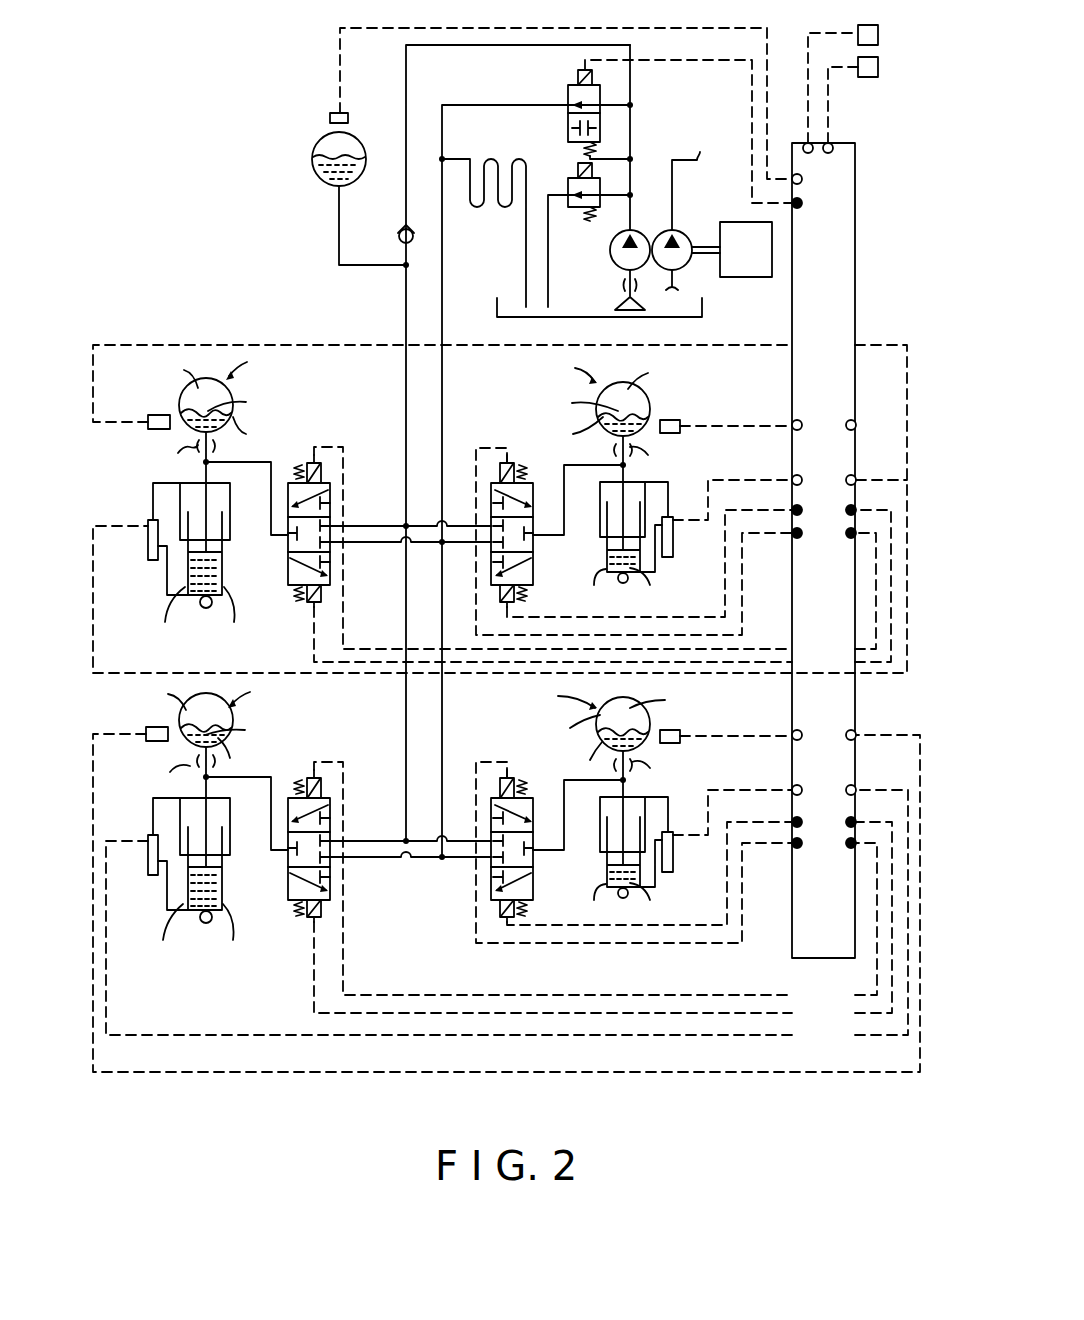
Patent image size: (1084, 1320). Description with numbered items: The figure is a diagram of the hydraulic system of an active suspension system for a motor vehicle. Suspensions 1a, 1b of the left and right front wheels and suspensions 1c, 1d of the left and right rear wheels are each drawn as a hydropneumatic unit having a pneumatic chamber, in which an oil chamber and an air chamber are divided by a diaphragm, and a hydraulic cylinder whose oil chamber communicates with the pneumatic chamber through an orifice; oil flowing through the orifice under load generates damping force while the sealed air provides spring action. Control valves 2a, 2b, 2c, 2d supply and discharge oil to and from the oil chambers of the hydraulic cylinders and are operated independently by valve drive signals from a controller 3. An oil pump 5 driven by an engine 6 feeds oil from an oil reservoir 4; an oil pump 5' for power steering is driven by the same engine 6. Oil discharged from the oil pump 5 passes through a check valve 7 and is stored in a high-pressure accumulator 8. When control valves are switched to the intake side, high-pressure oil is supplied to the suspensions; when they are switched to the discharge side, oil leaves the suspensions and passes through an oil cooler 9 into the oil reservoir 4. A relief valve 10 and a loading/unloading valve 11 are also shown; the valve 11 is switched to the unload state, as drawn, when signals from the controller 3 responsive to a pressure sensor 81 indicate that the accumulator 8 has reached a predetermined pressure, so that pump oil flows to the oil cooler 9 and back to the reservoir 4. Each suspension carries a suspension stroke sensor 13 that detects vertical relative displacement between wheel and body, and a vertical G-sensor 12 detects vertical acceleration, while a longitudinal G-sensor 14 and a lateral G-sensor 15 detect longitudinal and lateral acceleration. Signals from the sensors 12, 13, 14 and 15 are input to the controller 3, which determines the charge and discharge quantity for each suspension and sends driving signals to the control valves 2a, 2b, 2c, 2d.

The suspension of left front wheel 1a is at (191, 614).
The suspension of right front wheel 1b is at (598, 525).
The suspension of left rear wheel 1c is at (191, 932).
The suspension of right rear wheel 1d is at (595, 862).
The control valve 2a is at (333, 496).
The control valve 2b is at (489, 493).
The control valve 2c is at (333, 811).
The control valve 2d is at (487, 879).
The controller 3 is at (858, 316).
The oil reservoir 4 is at (568, 317).
The oil pump 5 is at (633, 177).
The oil pump for power steering 5' is at (686, 221).
The engine 6 is at (757, 277).
The check valve 7 is at (398, 237).
The high-pressure accumulator 8 is at (317, 178).
The pressure sensor 81 is at (330, 118).
The oil cooler 9 is at (490, 212).
The relief valve 10 is at (567, 183).
The loading/unloading valve 11 is at (568, 127).
The vertical G-sensor 12 is at (155, 413).
The suspension stroke sensor 13 is at (150, 542).
The longitudinal G-sensor 14 is at (879, 67).
The lateral G-sensor 15 is at (879, 35).